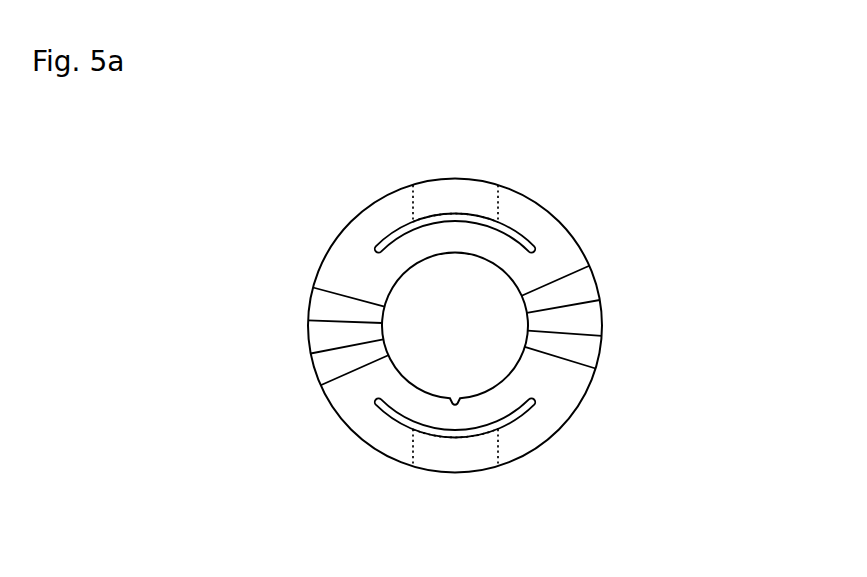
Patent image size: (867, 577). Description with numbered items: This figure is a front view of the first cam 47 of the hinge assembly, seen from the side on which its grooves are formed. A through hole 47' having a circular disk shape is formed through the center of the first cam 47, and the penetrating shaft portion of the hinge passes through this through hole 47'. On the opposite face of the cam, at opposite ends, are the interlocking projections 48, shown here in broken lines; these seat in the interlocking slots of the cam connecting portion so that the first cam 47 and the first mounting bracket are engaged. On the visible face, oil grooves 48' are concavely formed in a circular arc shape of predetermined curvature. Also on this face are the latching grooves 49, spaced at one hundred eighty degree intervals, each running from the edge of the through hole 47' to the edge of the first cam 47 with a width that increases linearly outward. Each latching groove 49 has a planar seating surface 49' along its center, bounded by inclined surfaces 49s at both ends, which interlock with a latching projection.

The first cam 47 is at (477, 287).
The through hole 47' is at (455, 328).
The interlocking projection 48 is at (467, 327).
The oil groove 48' is at (446, 284).
The latching groove 49 is at (445, 317).
The seating surface 49' is at (295, 345).
The inclined surface 49s is at (320, 308).